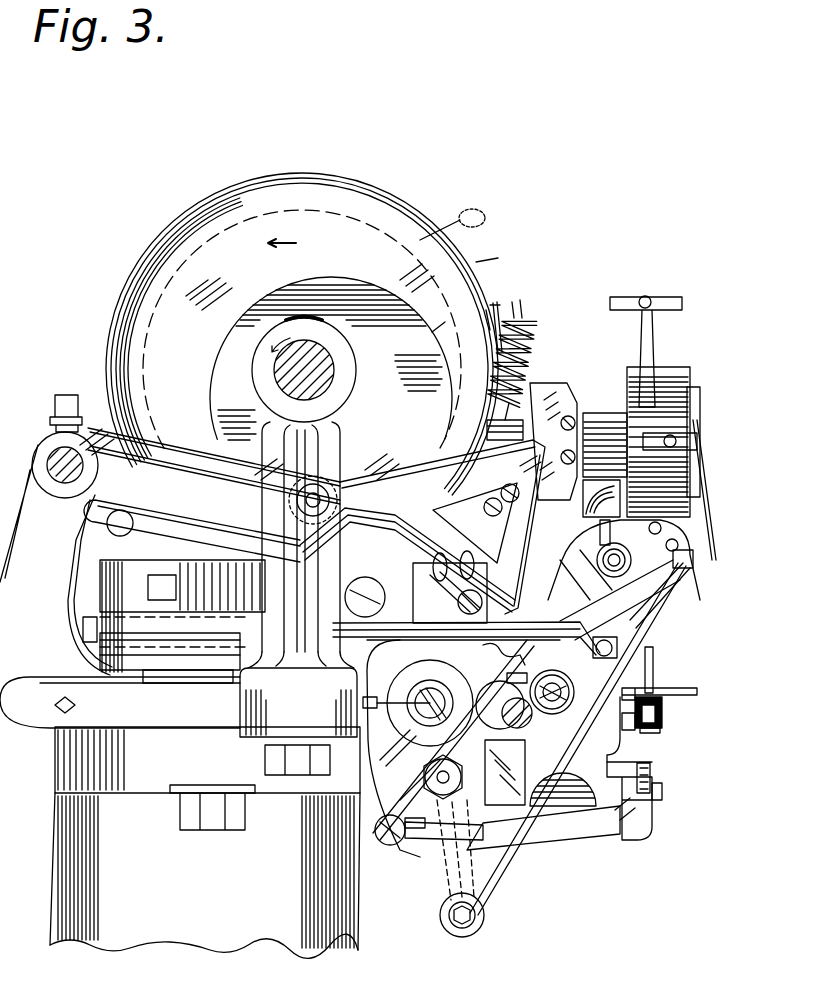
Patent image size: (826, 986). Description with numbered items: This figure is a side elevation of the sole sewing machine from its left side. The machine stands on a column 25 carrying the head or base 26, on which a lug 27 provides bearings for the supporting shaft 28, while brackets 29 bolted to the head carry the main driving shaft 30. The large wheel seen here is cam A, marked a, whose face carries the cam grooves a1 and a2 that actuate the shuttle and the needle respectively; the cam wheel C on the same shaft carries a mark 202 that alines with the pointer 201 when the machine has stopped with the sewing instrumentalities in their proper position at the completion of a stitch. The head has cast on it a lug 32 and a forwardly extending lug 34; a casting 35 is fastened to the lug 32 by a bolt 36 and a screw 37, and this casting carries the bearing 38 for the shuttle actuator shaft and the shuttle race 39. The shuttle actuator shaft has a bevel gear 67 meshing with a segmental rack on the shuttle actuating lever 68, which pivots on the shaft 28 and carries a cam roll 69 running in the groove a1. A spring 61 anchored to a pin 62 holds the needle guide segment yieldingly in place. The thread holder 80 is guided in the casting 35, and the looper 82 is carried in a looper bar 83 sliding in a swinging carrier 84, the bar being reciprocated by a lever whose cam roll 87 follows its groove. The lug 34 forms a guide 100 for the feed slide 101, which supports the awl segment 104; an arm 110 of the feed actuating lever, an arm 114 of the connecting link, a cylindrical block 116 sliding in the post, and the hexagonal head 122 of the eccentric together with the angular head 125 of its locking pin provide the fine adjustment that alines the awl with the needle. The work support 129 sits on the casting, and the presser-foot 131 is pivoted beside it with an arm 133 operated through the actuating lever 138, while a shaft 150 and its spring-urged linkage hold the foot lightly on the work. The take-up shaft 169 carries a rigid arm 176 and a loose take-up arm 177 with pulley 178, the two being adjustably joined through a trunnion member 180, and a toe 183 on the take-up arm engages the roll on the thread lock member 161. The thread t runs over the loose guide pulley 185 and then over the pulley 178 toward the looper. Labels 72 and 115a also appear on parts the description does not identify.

The cam wheel A a is at (289, 334).
The cam groove a1 is at (331, 358).
The cam groove a2 is at (452, 224).
The cam wheel C is at (495, 258).
The column 25 is at (205, 842).
The head or base 26 is at (120, 702).
The lug 27 is at (56, 560).
The supporting shaft 28 is at (65, 446).
The brackets 29 is at (328, 456).
The main driving shaft 30 is at (334, 378).
The lug 32 is at (463, 748).
The forwardly extending lug 34 is at (560, 840).
The casting 35 is at (582, 575).
The bolt 36 is at (416, 593).
The screw 37 is at (438, 560).
The bearing 38 is at (596, 410).
The shuttle race 39 is at (680, 367).
The spring 61 is at (620, 600).
The pin 62 is at (600, 530).
The bevel gear 67 is at (542, 445).
The shuttle actuating lever 68 is at (214, 482).
The cam roll 69 is at (336, 500).
The spring seat 72 is at (508, 421).
The thread holder 80 is at (690, 585).
The looper 82 is at (660, 620).
The looper bar 83 is at (520, 640).
The carrier 84 is at (161, 650).
The cam roll 87 is at (182, 616).
The guide 100 is at (608, 795).
The feed slide 101 is at (640, 802).
The awl segment 104 is at (585, 501).
The arm 110 is at (664, 712).
The arm 114 is at (685, 680).
The rod 115a is at (654, 660).
The cylindrical block 116 is at (530, 735).
The hexagonal head 122 is at (632, 732).
The angular head 125 is at (660, 730).
The work support 129 is at (620, 570).
The presser-foot 131 is at (612, 530).
The arm 133 is at (535, 375).
The actuating lever 138 is at (178, 528).
The shaft 150 is at (357, 708).
The lock member 161 is at (446, 672).
The take-up shaft 169 is at (426, 777).
The arm 176 is at (411, 812).
The take-up arm 177 is at (445, 888).
The thread roll or pulley 178 is at (472, 932).
The trunnion member 180 is at (435, 840).
The toe 183 is at (420, 740).
The guide pulley 185 is at (575, 690).
The pointer 201 is at (500, 306).
The mark 202 is at (492, 315).
The thread t is at (565, 752).